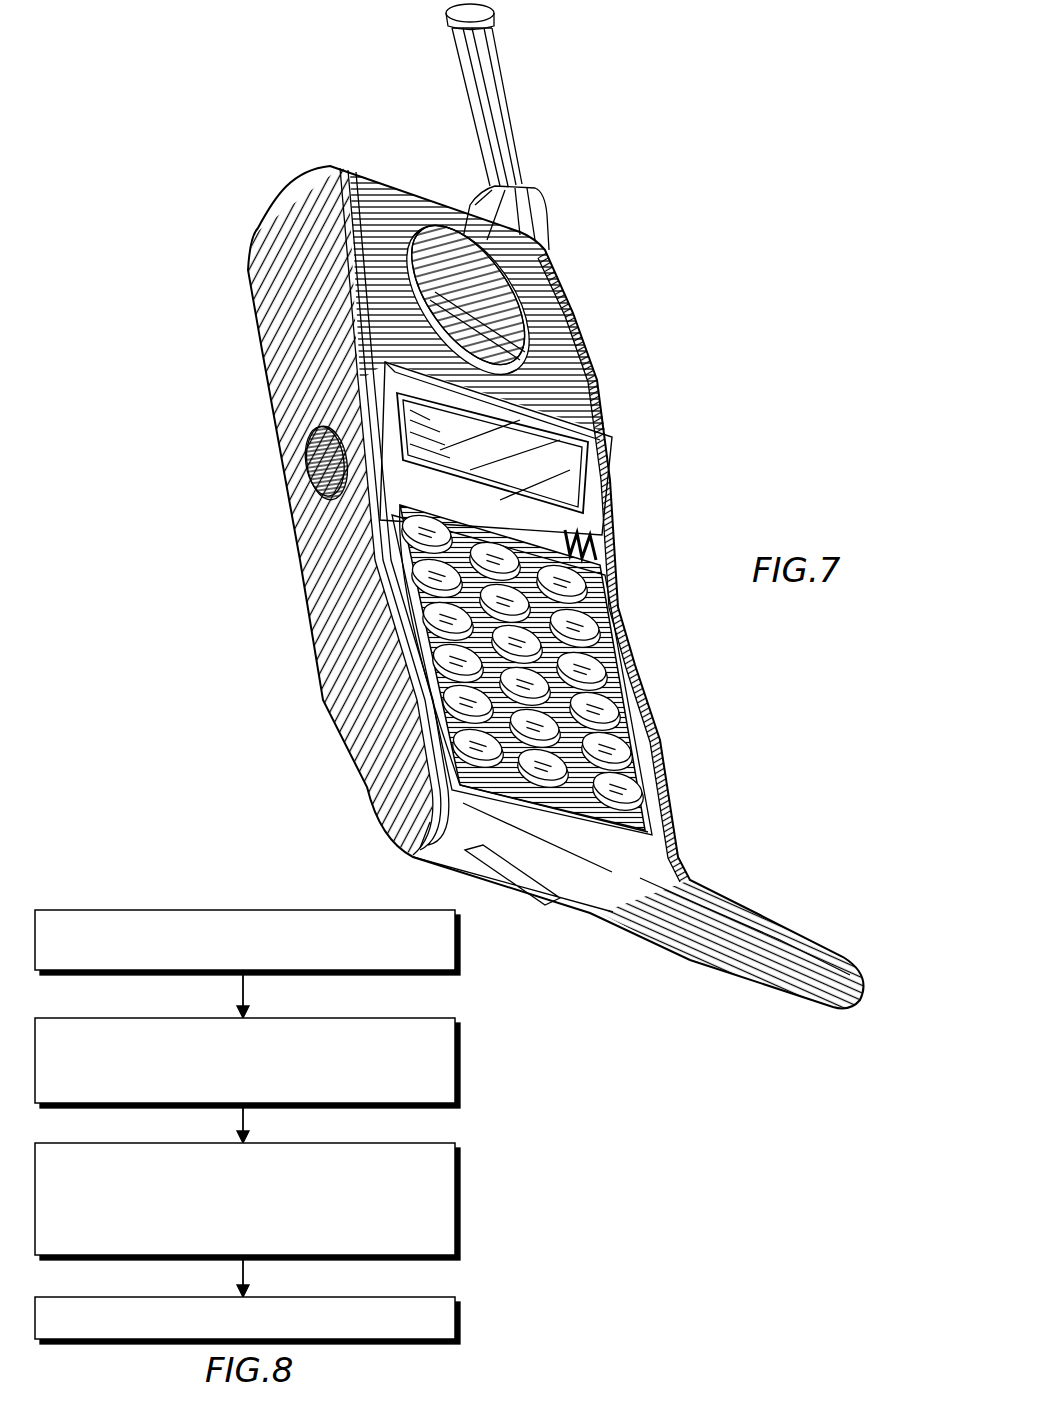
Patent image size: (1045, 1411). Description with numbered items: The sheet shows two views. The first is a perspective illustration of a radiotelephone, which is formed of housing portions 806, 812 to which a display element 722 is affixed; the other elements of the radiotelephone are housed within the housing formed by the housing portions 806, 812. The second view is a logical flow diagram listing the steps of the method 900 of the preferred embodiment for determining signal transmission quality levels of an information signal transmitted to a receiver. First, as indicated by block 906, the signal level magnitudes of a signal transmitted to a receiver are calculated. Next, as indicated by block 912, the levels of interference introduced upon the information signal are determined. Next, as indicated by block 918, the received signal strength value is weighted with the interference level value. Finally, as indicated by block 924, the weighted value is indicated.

In FIG. 7, the display element 722 is at (592, 507).
In FIG. 7, the housing portion 806 is at (625, 690).
In FIG. 7, the housing portion 812 is at (370, 790).
In FIG. 8, the method 900 is at (118, 896).
In FIG. 8, the block 906 is at (352, 910).
In FIG. 8, the block 912 is at (358, 1018).
In FIG. 8, the block 918 is at (372, 1143).
In FIG. 8, the block 924 is at (370, 1297).